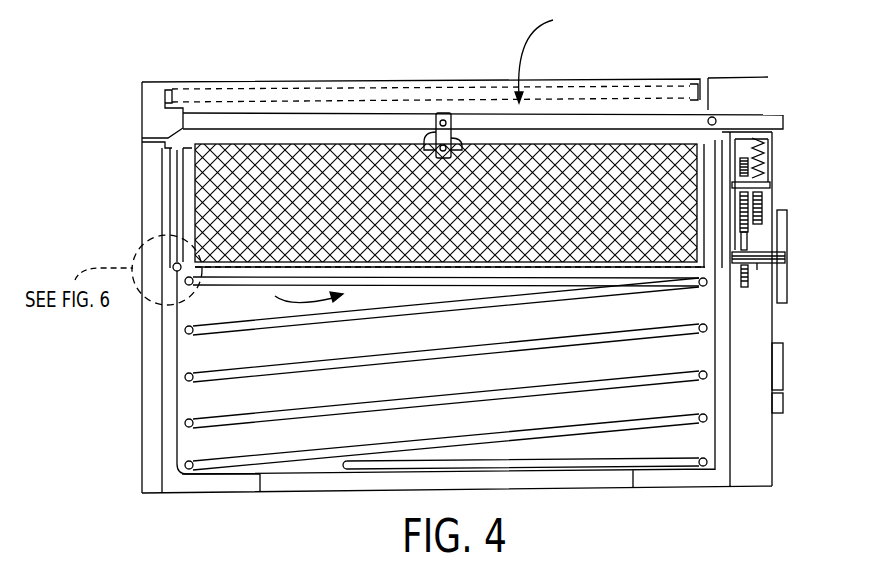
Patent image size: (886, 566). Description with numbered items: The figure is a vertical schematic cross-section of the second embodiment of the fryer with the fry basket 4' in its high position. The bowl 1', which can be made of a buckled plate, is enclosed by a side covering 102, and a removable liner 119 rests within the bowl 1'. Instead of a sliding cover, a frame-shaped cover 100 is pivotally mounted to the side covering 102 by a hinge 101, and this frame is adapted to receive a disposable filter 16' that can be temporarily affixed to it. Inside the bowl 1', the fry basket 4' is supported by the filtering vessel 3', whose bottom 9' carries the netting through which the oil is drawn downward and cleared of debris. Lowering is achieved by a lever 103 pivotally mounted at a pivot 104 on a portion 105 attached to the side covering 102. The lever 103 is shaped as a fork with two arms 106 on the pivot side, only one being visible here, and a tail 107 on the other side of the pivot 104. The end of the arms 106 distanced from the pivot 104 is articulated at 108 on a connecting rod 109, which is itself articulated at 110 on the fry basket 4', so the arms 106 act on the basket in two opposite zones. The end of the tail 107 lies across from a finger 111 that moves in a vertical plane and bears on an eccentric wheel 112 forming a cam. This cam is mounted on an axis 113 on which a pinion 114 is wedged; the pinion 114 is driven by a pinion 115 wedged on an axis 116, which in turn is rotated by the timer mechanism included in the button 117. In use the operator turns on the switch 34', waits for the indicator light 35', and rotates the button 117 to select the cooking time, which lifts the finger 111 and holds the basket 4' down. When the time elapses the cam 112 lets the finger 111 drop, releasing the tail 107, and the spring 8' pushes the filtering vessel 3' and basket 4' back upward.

The cover 100 is at (152, 120).
The hinge 101 is at (143, 137).
The disposable filter 16' is at (431, 74).
The filtering vessel 3' is at (138, 205).
The fry basket 4' is at (157, 205).
The removable liner 119 is at (170, 223).
The side covering 102 is at (150, 343).
The bowl 1' is at (186, 372).
The spring 8' is at (408, 396).
The bottom 9' is at (300, 298).
The lever 103 is at (549, 54).
The pivot 104 is at (712, 117).
The portion 105 is at (767, 97).
The arms 106 is at (564, 122).
The tail 107 is at (783, 121).
The articulation 108 is at (446, 113).
The connecting rod 109 is at (439, 113).
The articulation 110 is at (436, 134).
The finger 111 is at (768, 167).
The eccentric wheel 112 is at (768, 201).
The axis 113 is at (770, 189).
The pinion 114 is at (770, 230).
The pinion 115 is at (757, 270).
The axis 116 is at (747, 287).
The button 117 is at (787, 280).
The switch 34' is at (795, 378).
The indicator light 35' is at (795, 420).